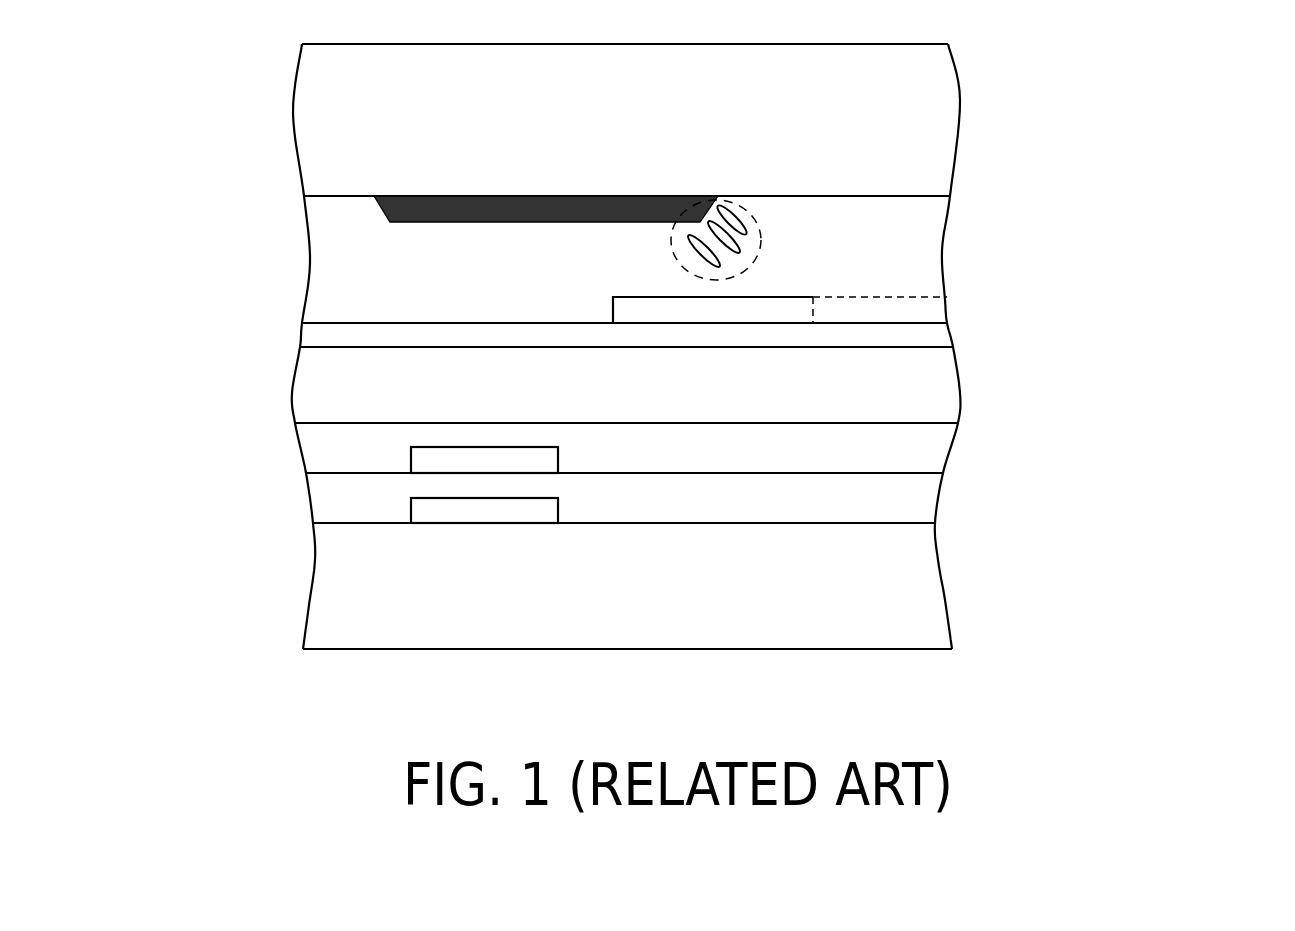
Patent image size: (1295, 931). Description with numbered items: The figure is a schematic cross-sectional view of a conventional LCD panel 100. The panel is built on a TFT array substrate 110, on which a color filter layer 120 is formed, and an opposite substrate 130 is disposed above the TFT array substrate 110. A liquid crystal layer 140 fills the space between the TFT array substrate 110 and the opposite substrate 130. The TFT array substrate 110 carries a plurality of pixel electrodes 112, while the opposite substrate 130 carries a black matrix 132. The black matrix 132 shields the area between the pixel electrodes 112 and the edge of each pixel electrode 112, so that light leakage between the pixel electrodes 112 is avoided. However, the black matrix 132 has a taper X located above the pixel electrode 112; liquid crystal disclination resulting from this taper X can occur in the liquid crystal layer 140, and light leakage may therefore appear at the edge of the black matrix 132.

The LCD panel 100 is at (1276, 697).
The TFT array substrate 110 is at (977, 648).
The pixel electrode 112 is at (630, 308).
The color filter layer 120 is at (313, 379).
The opposite substrate 130 is at (977, 45).
The black matrix 132 is at (433, 224).
The liquid crystal layer 140 is at (977, 198).
The taper X is at (762, 231).